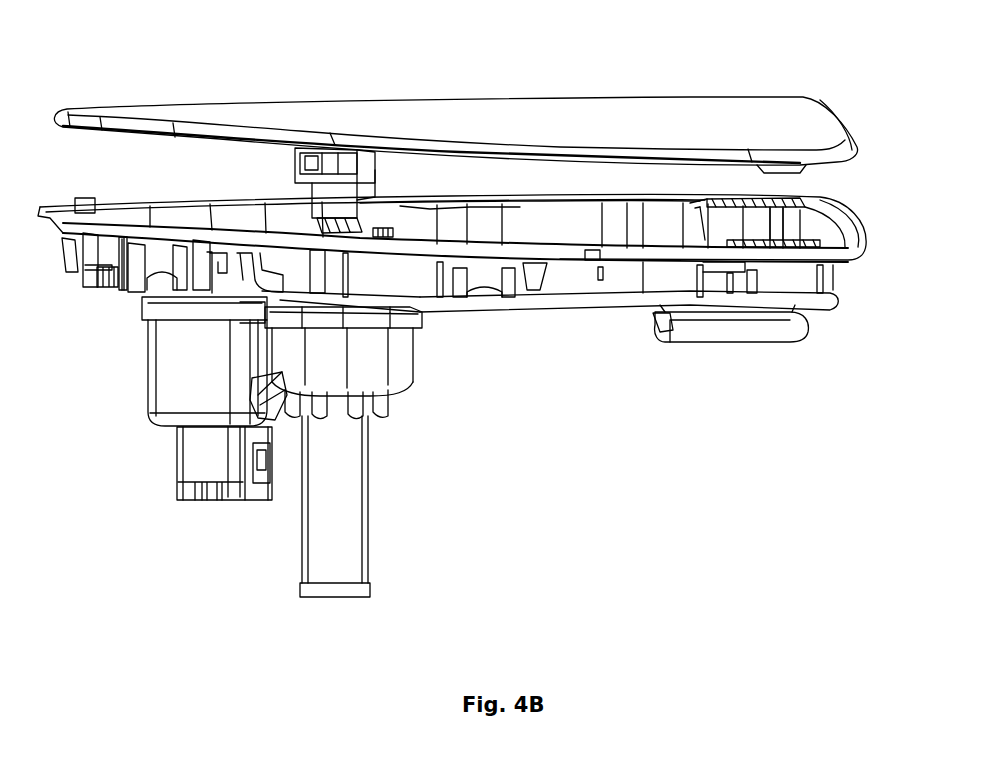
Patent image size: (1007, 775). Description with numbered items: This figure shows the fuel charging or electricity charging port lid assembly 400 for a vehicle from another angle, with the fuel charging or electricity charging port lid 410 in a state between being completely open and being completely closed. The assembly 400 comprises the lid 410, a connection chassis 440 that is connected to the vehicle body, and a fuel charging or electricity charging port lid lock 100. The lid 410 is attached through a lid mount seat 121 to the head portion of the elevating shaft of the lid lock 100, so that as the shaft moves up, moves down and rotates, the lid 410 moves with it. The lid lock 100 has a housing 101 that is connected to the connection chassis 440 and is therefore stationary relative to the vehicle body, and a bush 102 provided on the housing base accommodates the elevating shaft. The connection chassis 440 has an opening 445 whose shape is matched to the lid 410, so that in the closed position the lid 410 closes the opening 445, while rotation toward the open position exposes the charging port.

The fuel charging or electricity charging port lid 410 is at (728, 120).
The lid mount seat 121 is at (297, 171).
The opening 445 is at (742, 232).
The connection chassis 440 is at (765, 318).
The fuel charging or electricity charging port lid assembly 400 is at (682, 503).
The fuel charging or electricity charging port lid lock 100 is at (125, 378).
The housing 101 is at (403, 360).
The bush 102 is at (347, 523).